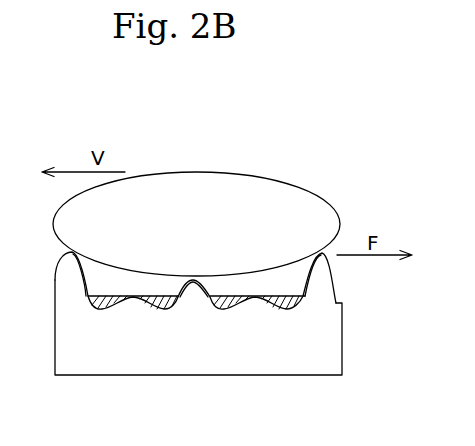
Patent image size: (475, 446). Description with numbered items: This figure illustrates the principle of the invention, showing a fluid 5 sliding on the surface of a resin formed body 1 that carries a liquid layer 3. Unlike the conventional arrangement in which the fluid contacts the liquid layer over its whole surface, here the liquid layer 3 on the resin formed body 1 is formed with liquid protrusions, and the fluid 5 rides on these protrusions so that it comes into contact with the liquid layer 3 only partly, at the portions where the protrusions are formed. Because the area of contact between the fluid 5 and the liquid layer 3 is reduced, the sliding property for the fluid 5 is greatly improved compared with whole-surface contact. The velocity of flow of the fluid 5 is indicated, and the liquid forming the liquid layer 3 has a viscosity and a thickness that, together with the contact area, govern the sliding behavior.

The resin formed body 1 is at (272, 368).
The liquid layer 3 is at (86, 298).
The fluid 5 is at (258, 181).